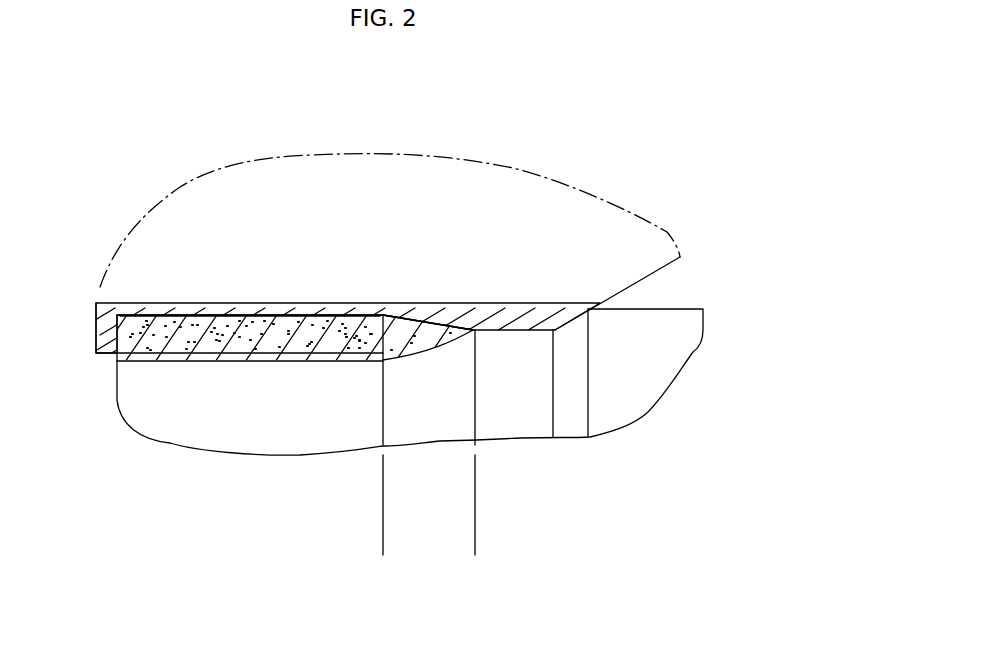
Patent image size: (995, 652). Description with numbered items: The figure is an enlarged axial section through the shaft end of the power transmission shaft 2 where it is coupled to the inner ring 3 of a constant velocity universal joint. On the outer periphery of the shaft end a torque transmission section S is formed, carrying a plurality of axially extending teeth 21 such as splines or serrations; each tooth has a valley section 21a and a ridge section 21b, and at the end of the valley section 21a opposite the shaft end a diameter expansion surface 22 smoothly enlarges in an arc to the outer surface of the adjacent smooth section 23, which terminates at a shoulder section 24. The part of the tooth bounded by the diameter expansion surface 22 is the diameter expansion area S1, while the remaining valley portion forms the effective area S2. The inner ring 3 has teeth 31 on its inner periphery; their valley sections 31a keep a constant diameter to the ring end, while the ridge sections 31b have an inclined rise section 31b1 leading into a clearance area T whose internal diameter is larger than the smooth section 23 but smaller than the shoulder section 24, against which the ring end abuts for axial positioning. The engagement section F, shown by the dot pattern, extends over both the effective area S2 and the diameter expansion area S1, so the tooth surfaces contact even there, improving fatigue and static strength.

The power transmission shaft 2 is at (632, 383).
The inner ring 3 is at (193, 223).
The teeth 21 is at (212, 363).
The valley section 21a is at (262, 350).
The ridge section 21b is at (262, 314).
The diameter expansion surface 22 is at (448, 352).
The smooth section 23 is at (531, 330).
The shoulder section 24 is at (568, 330).
The teeth 31 is at (148, 300).
The valley sections 31a is at (395, 313).
The ridge sections 31b is at (102, 355).
The rise section 31b1 is at (467, 325).
The torque transmission section S is at (320, 300).
The engagement section F is at (215, 322).
The clearance area T is at (475, 248).
The diameter expansion area S1 is at (477, 455).
The effective area S2 is at (270, 543).